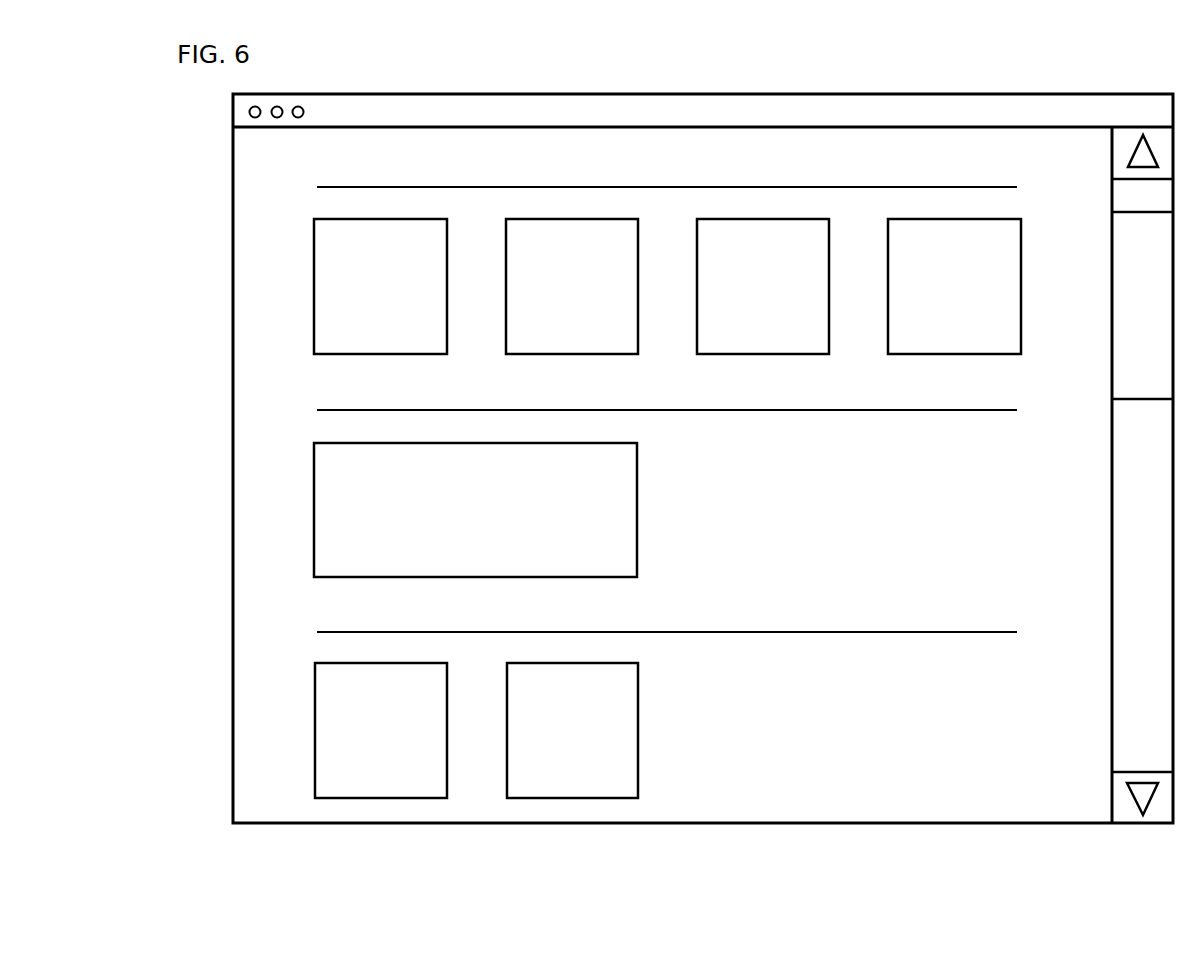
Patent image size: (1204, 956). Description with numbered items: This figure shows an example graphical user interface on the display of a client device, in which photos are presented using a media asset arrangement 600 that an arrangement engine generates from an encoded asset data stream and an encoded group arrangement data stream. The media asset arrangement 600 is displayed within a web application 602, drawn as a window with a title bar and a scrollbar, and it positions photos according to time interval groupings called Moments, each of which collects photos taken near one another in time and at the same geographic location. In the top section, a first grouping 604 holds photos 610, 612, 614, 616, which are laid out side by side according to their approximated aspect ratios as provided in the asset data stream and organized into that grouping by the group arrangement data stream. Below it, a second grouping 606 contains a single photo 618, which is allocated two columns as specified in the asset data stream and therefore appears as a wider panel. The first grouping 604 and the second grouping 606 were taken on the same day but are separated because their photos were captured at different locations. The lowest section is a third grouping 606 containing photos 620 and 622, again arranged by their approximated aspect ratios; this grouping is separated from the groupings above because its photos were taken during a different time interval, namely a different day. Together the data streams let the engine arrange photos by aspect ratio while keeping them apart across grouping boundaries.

The media asset arrangement 600 is at (1166, 69).
The web application 602 is at (703, 93).
The first grouping 604 is at (596, 255).
The second grouping 606 is at (594, 588).
The photo 610 is at (380, 286).
The photo 612 is at (572, 286).
The photo 614 is at (763, 286).
The photo 616 is at (954, 286).
The photo 618 is at (475, 510).
The photo 620 is at (381, 730).
The photo 622 is at (572, 730).